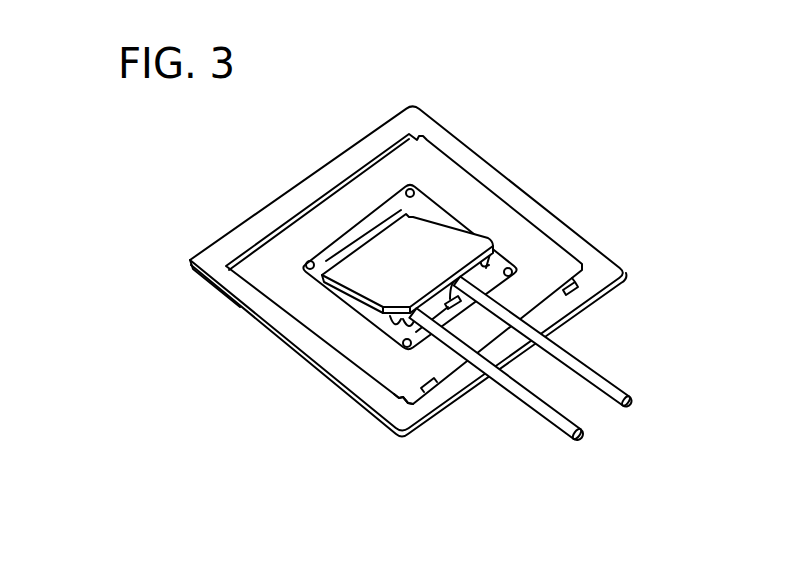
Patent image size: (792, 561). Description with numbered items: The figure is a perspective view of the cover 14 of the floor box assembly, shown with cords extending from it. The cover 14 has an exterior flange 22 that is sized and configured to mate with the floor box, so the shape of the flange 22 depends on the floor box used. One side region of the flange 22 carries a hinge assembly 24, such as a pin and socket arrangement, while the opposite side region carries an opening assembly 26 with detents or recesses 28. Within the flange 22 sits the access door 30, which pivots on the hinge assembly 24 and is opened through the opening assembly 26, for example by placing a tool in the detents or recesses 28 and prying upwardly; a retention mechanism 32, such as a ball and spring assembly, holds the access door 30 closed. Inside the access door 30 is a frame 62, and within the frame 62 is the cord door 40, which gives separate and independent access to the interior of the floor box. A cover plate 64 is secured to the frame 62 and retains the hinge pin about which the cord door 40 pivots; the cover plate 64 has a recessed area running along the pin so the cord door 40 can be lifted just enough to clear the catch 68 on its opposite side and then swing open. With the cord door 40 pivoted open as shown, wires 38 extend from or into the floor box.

The cover 14 is at (402, 273).
The exterior flange 22 is at (287, 347).
The hinge assembly 24 is at (228, 268).
The opening assembly 26 is at (435, 390).
The detents or recesses 28 is at (568, 294).
The access door 30 is at (503, 220).
The retention mechanism 32 is at (397, 403).
The wires 38 is at (565, 418).
The cord door 40 is at (385, 262).
The frame 62 is at (431, 201).
The cover plate 64 is at (362, 234).
The catch 68 is at (455, 307).